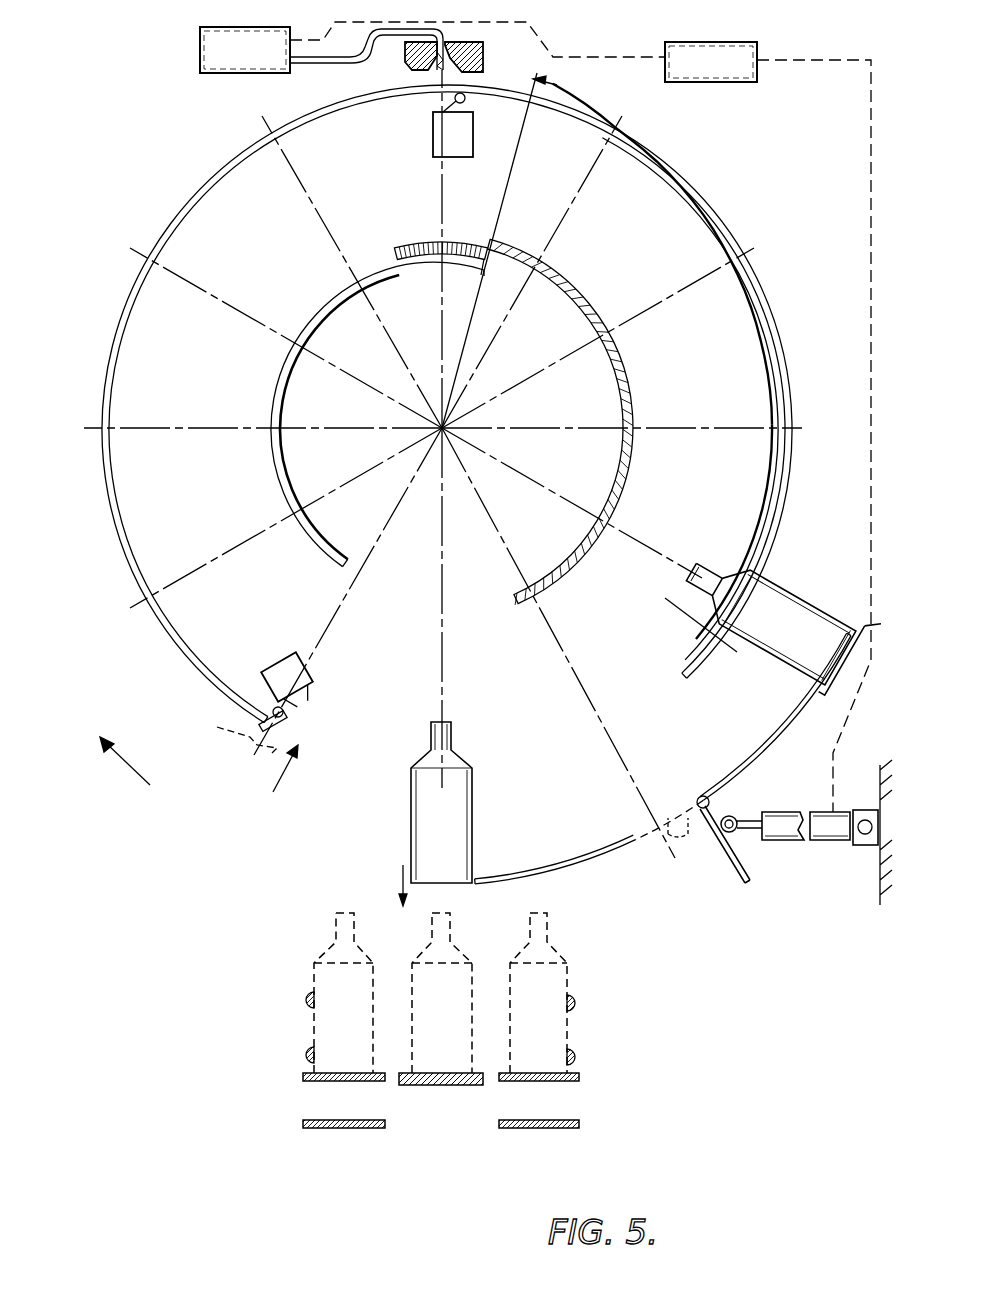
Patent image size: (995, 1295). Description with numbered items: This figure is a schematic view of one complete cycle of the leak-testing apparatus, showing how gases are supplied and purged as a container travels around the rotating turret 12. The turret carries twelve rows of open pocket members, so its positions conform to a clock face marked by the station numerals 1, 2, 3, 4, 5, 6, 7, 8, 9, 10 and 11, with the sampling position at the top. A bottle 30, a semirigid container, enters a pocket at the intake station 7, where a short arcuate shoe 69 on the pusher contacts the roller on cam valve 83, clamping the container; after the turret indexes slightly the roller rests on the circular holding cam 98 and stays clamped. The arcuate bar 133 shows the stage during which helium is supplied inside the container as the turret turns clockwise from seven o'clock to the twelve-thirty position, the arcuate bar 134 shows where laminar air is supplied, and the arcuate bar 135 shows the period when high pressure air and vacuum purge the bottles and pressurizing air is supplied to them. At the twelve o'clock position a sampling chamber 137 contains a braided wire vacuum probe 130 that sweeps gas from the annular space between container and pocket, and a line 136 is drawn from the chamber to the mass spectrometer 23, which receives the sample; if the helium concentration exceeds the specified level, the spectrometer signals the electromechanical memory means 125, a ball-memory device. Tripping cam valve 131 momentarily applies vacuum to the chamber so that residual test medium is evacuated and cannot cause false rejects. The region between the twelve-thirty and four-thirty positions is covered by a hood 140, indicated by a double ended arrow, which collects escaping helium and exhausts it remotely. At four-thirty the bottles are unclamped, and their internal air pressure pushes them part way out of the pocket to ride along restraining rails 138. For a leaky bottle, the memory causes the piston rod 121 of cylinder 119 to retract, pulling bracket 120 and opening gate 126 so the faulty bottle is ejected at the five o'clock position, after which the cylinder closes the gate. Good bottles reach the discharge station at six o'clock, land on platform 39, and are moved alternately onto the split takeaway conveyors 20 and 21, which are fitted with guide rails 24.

The 1 o'clock station 1 is at (532, 272).
The 2 o'clock station 2 is at (598, 338).
The 3 o'clock station 3 is at (622, 445).
The 4 o'clock station 4 is at (584, 503).
The 5 o'clock station 5 is at (558, 643).
The 6 o'clock station 6 is at (458, 608).
The 7 o'clock station 7 is at (348, 591).
The 8 o'clock station 8 is at (286, 518).
The 9 o'clock station 9 is at (263, 413).
The 10 o'clock station 10 is at (286, 333).
The 11 o'clock station 11 is at (352, 272).
The rotating turret 12 is at (80, 326).
The split takeaway conveyor 20 is at (305, 1121).
The split takeaway conveyor 21 is at (570, 1122).
The mass spectrometer 23 is at (200, 62).
The guide rails 24 is at (576, 1056).
The bottle 30 is at (422, 805).
The platform 39 is at (431, 1084).
The arcuate shoe 69 is at (256, 723).
The cam valve 83 is at (298, 660).
The circular holding cam 98 is at (121, 547).
The cylinder 119 is at (816, 842).
The bracket 120 is at (740, 836).
The piston rod 121 is at (753, 812).
The electromechanical memory means 125 is at (750, 80).
The gate 126 is at (743, 881).
The braided wire vacuum probe 130 is at (412, 66).
The cam valve 131 is at (458, 150).
The arcuate bar 133 is at (281, 472).
The arcuate bar 134 is at (413, 243).
The arcuate bar 135 is at (636, 383).
The supply line 136 is at (334, 68).
The sampling chamber 137 is at (484, 53).
The restraining rails 138 is at (790, 712).
The hood 140 is at (790, 348).